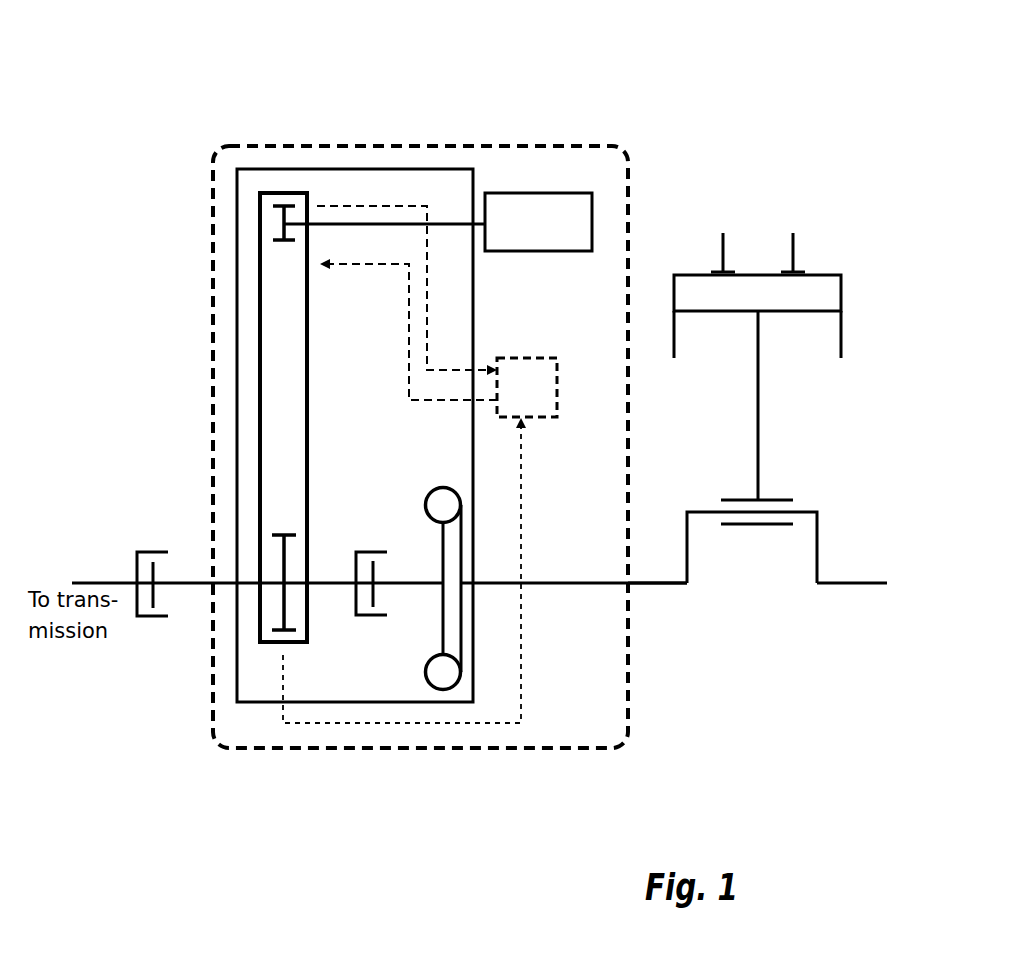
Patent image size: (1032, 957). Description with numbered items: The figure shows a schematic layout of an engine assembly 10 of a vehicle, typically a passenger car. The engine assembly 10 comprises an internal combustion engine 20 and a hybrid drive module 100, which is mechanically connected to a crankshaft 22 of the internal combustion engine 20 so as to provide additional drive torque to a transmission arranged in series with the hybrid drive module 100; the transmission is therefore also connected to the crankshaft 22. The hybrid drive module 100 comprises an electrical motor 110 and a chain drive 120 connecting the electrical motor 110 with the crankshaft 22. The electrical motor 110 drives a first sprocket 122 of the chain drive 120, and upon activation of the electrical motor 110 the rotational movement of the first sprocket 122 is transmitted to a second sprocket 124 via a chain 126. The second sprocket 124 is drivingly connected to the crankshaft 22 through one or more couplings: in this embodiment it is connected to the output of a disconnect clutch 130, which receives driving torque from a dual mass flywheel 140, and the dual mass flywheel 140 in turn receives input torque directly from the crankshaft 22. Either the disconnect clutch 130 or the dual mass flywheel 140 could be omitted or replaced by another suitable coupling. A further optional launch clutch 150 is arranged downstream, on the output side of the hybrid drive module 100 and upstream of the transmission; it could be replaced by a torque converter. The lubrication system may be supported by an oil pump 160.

The engine assembly 10 is at (721, 114).
The internal combustion engine 20 is at (858, 278).
The crankshaft 22 is at (663, 584).
The hybrid drive module 100 is at (404, 145).
The electrical motor 110 is at (500, 193).
The chain drive 120 is at (324, 479).
The first sprocket 122 is at (283, 230).
The second sprocket 124 is at (283, 608).
The chain 126 is at (307, 362).
The disconnect clutch 130 is at (365, 617).
The dual mass flywheel 140 is at (430, 493).
The launch clutch 150 is at (148, 550).
The oil pump 160 is at (535, 418).